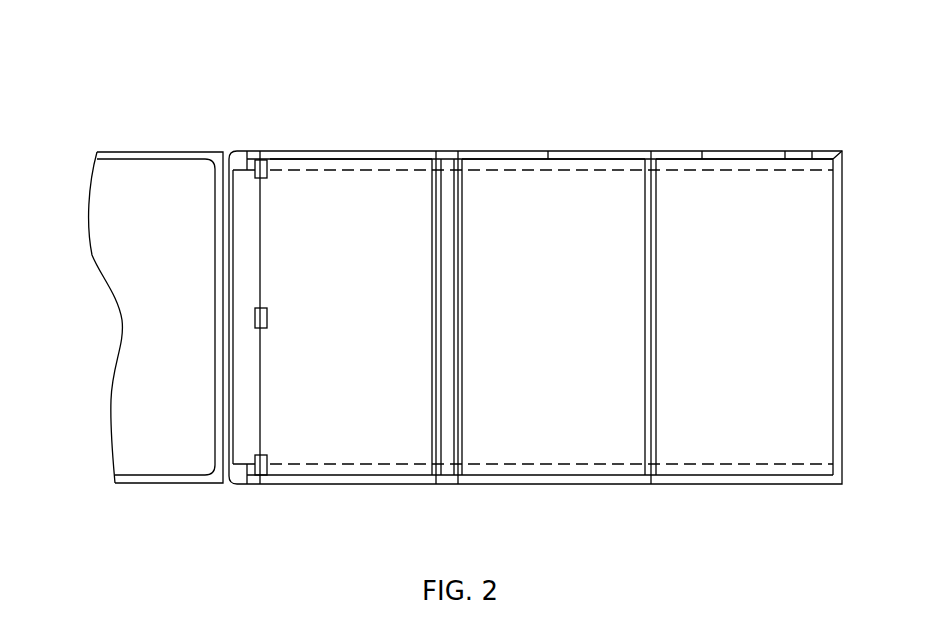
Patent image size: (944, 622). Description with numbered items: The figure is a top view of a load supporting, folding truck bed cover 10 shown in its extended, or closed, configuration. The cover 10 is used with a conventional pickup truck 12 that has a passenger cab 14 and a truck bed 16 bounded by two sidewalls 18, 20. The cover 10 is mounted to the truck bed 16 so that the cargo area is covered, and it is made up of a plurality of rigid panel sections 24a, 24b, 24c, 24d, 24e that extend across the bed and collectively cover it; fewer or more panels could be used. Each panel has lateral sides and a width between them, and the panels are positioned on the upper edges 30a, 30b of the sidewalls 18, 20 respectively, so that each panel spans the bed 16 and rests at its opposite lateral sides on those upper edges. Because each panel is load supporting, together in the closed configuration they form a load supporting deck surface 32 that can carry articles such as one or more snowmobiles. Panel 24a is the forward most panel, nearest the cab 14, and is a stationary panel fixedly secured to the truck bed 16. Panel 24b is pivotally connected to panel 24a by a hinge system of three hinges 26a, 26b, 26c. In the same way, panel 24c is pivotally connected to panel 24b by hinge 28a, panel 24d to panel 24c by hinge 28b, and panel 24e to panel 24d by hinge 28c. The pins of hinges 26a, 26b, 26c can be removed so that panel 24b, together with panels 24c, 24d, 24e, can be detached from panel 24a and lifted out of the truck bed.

The truck bed cover 10 is at (630, 73).
The pickup truck 12 is at (147, 150).
The passenger cab 14 is at (160, 457).
The truck bed 16 is at (482, 484).
The sidewall 18 is at (723, 484).
The sidewall 20 is at (777, 151).
The panel section 24a is at (237, 260).
The panel section 24b is at (350, 160).
The panel section 24c is at (445, 160).
The panel section 24d is at (550, 160).
The panel section 24e is at (702, 160).
The hinge 26a is at (257, 178).
The hinge 26b is at (255, 320).
The hinge 26c is at (255, 462).
The hinge 28a is at (434, 310).
The hinge 28b is at (462, 275).
The hinge 28c is at (651, 325).
The upper edge 30a is at (328, 464).
The upper edge 30b is at (290, 170).
The load supporting deck surface 32 is at (795, 238).